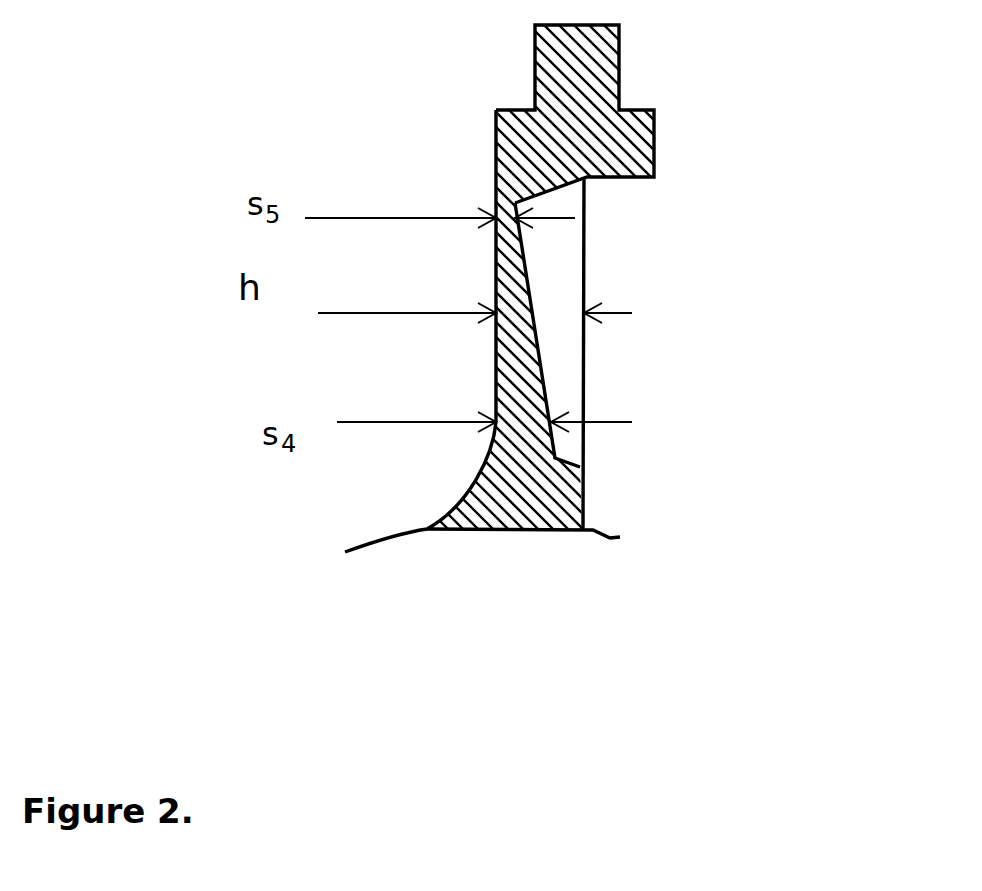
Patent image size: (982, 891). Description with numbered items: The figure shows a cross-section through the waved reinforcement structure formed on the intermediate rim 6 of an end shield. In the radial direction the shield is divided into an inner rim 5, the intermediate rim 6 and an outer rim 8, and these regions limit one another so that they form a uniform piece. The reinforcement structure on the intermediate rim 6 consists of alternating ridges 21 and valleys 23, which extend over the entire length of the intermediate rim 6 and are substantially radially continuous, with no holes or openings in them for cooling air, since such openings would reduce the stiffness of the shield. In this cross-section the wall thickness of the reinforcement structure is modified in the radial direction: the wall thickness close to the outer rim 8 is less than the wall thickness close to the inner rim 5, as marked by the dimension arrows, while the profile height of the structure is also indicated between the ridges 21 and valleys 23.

The outer rim 8 is at (577, 112).
The intermediate rim 6 is at (503, 375).
The valleys 23 is at (532, 273).
The ridges 21 is at (585, 378).
The inner rim 5 is at (557, 498).